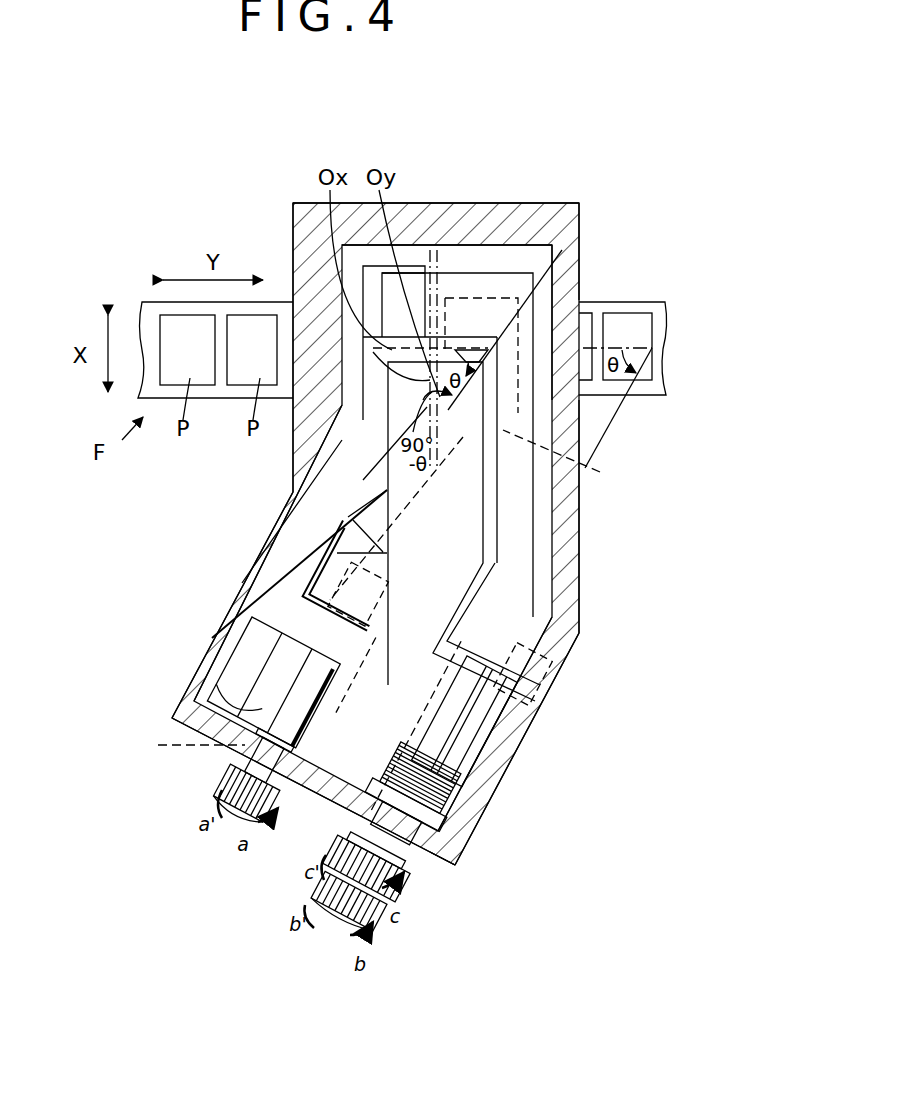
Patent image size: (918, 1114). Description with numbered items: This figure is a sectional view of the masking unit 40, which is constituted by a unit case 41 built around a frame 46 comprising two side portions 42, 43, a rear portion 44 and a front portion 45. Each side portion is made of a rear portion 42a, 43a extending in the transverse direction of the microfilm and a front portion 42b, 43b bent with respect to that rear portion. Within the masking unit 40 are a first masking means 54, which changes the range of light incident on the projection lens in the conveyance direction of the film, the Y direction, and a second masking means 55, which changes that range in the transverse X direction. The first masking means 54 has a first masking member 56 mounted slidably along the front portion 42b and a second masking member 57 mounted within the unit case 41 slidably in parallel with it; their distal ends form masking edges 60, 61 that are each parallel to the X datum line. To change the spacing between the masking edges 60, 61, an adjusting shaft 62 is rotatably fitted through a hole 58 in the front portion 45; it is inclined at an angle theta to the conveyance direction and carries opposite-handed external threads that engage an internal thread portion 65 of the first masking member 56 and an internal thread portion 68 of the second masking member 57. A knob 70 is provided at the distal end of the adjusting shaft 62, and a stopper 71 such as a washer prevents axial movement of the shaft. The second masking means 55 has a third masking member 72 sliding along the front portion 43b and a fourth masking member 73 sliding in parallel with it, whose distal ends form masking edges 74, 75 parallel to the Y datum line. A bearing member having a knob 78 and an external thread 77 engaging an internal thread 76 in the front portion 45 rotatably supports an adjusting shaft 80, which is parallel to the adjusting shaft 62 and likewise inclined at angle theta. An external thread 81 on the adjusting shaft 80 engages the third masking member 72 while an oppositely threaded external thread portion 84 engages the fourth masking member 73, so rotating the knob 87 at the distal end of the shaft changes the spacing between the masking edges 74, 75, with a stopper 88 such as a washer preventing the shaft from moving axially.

The masking unit 40 is at (590, 566).
The unit case 41 is at (585, 240).
The side portion 42 is at (218, 632).
The rear portion 42a is at (296, 460).
The front portion 42b is at (218, 656).
The side portion 43 is at (580, 580).
The rear portion 43a is at (572, 268).
The front portion 43b is at (535, 745).
The rear portion 44 is at (445, 205).
The front portion 45 is at (340, 790).
The frame 46 is at (553, 644).
The first masking means 54 is at (243, 596).
The second masking means 55 is at (385, 491).
The first masking member 56 is at (320, 508).
The second masking member 57 is at (568, 456).
The hole 58 is at (185, 743).
The masking edge 60 is at (430, 265).
The masking edge 61 is at (450, 290).
The adjusting shaft 62 is at (273, 682).
The internal thread portion 65 is at (358, 594).
The internal thread portion 68 is at (356, 675).
The knob 70 is at (245, 796).
The stopper 71 is at (265, 757).
The third masking member 72 is at (355, 575).
The fourth masking member 73 is at (508, 512).
The masking edge 74 is at (580, 240).
The masking edge 75 is at (465, 360).
The internal thread 76 is at (468, 857).
The external thread 77 is at (394, 827).
The knob 78 is at (366, 868).
The adjusting shaft 80 is at (465, 721).
The external thread 81 is at (416, 727).
The external thread portion 84 is at (478, 712).
The knob 87 is at (348, 903).
The stopper 88 is at (420, 778).